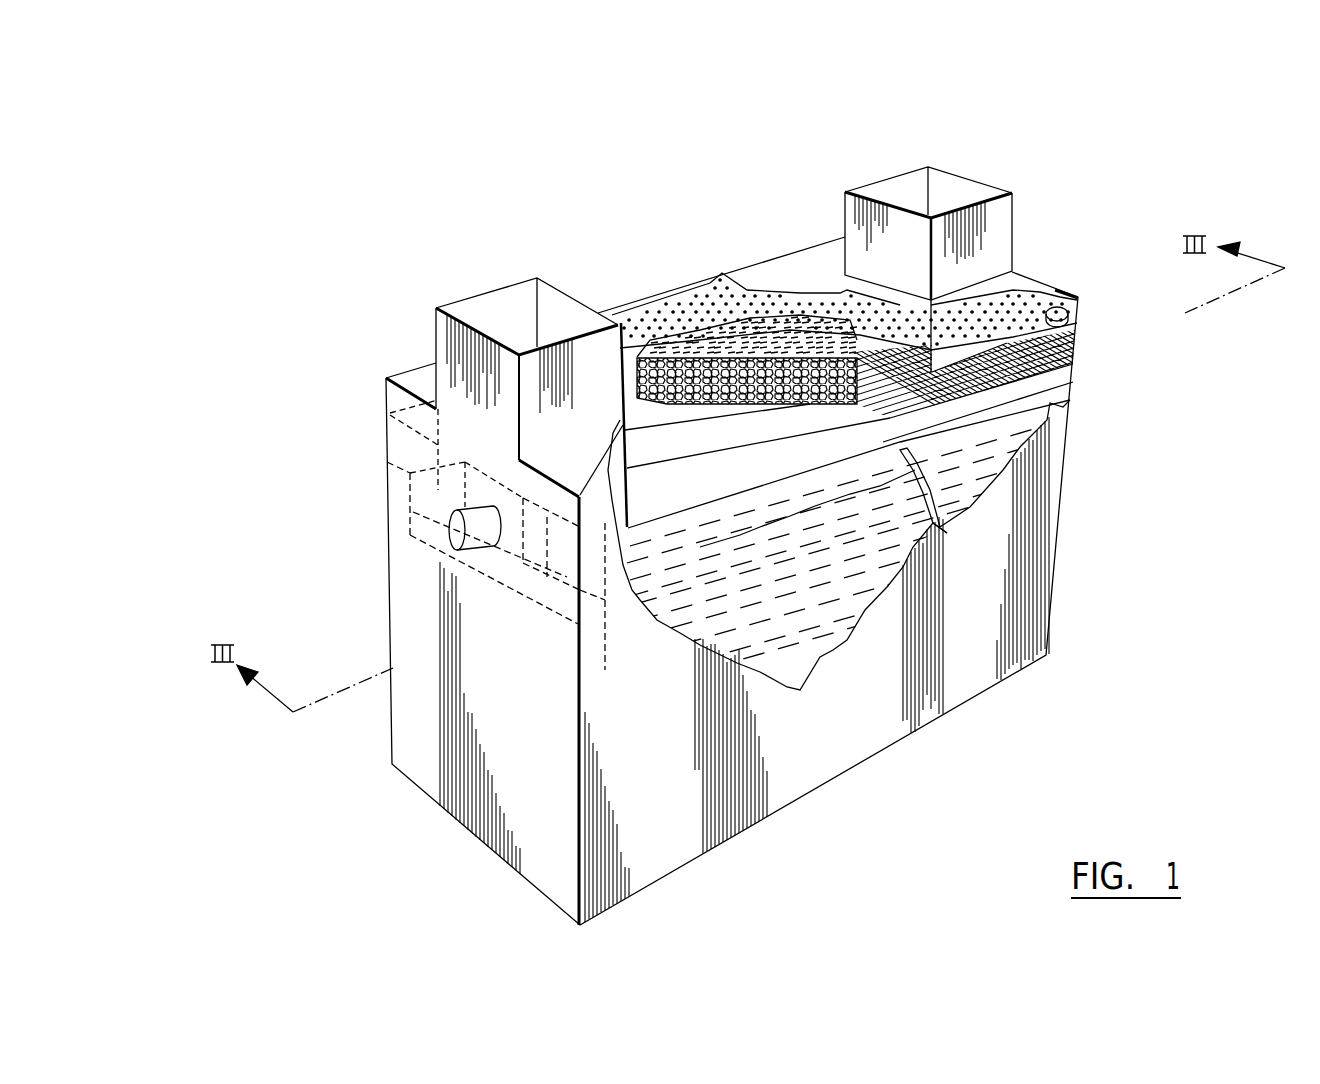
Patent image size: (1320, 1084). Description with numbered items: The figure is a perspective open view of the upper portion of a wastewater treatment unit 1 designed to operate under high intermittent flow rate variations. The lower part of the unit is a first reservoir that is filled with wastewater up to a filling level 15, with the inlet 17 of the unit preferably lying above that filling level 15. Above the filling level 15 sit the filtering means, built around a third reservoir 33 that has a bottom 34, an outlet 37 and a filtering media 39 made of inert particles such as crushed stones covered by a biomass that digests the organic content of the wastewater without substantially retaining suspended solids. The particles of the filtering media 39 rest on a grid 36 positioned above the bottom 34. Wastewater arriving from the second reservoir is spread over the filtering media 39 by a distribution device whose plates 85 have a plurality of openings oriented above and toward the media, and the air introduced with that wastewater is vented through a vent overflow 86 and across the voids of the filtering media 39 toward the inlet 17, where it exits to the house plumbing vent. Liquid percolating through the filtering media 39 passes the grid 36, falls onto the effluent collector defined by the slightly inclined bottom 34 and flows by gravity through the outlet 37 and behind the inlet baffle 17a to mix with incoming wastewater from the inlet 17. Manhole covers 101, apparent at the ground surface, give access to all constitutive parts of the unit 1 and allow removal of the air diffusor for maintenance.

The wastewater treatment unit 1 is at (300, 522).
The filling level 15 is at (1067, 407).
The inlet 17 is at (508, 537).
The inlet baffle 17a is at (497, 480).
The third reservoir 33 is at (686, 355).
The bottom 34 is at (947, 527).
The grid 36 is at (1047, 363).
The outlet 37 is at (390, 462).
The filtering media 39 is at (715, 352).
The plates 85 is at (1030, 312).
The vent overflow 86 is at (1068, 313).
The manhole covers 101 is at (503, 300).